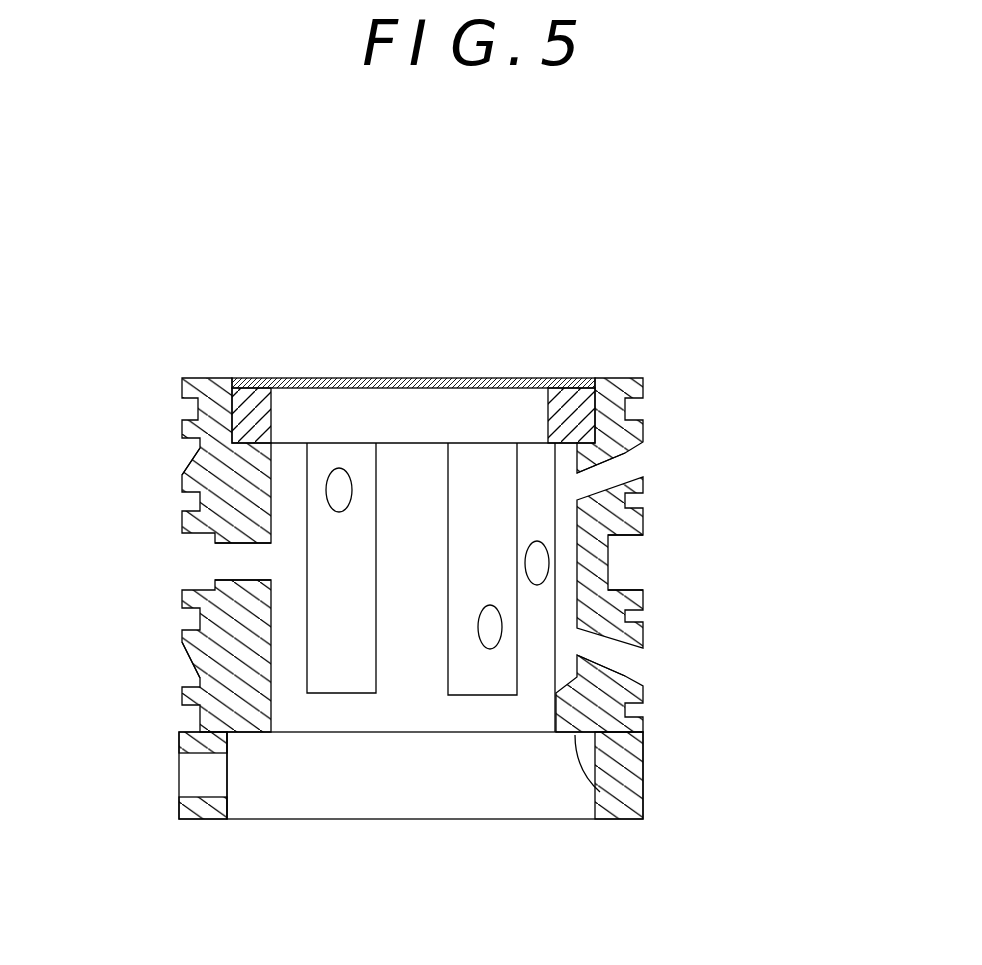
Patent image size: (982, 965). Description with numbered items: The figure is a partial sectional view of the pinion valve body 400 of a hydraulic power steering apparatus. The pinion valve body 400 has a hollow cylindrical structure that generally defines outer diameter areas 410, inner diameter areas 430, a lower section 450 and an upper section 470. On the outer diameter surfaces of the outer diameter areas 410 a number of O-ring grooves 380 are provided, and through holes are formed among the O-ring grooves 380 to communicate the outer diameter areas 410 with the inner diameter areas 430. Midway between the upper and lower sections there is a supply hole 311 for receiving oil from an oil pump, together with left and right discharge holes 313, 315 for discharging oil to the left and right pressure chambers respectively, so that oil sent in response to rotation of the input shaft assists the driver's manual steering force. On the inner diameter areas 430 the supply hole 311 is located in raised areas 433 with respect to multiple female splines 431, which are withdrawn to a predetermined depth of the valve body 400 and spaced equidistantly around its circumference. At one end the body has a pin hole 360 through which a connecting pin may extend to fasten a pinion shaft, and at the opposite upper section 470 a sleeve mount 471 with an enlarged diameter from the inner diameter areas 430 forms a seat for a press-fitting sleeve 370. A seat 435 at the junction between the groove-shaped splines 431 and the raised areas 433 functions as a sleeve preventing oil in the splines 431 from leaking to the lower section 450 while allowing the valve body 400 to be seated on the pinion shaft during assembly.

The pinion valve body 400 is at (720, 322).
The outer diameter areas 410 is at (182, 385).
The upper section 470 is at (618, 408).
The sleeve mount 471 is at (257, 442).
The press-fitting sleeve 370 is at (567, 407).
The inner diameter areas 430 is at (343, 300).
The raised areas 433 is at (412, 482).
The female splines 431 is at (490, 482).
The left discharge hole 313 is at (337, 491).
The supply hole 311 is at (227, 560).
The right discharge hole 315 is at (198, 650).
The O-ring grooves 380 is at (640, 718).
The lower section 450 is at (645, 773).
The pin hole 360 is at (190, 774).
The seat 435 is at (256, 733).